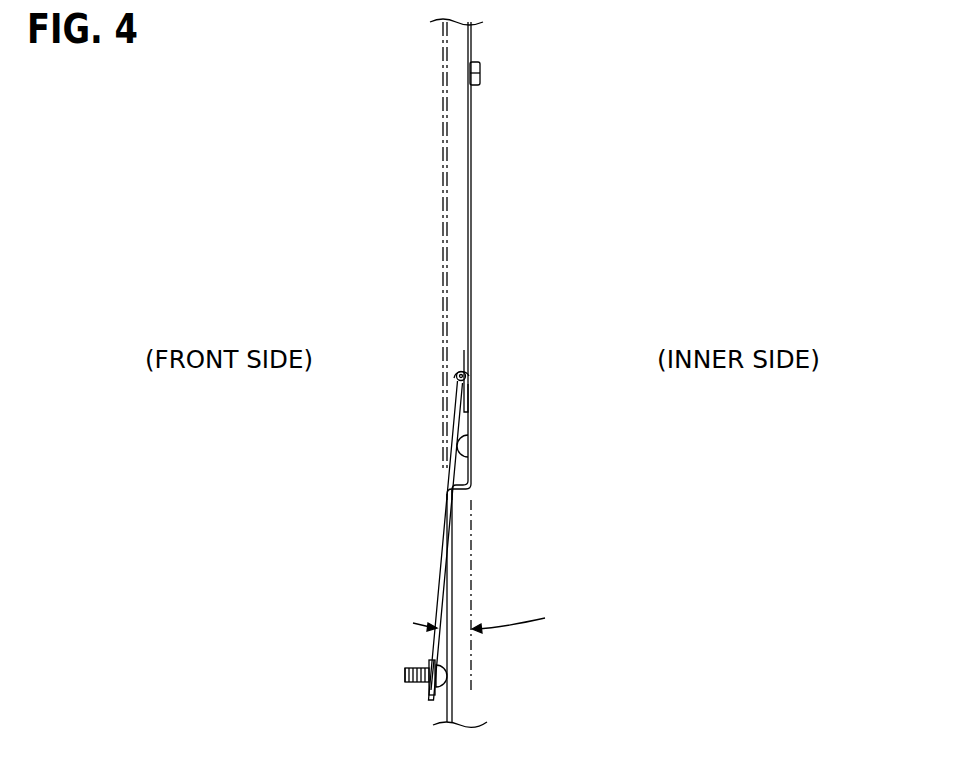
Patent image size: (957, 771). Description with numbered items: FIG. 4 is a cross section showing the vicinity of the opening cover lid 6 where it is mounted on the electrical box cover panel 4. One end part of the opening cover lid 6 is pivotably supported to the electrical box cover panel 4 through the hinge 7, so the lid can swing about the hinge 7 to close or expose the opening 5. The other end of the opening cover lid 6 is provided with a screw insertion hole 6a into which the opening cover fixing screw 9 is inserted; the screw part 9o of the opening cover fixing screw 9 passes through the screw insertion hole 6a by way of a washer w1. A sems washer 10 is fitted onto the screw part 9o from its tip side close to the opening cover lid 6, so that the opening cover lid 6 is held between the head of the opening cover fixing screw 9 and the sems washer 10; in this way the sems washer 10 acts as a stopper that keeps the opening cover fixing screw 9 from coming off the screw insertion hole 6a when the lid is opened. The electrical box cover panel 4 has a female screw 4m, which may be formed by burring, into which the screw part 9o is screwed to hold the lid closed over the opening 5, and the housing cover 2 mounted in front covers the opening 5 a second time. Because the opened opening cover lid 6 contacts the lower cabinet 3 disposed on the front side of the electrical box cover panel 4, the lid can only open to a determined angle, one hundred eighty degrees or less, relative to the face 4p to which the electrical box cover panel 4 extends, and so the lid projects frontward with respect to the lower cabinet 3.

The housing cover 2 is at (427, 153).
The lower cabinet 3 is at (567, 490).
The electrical box cover panel 4 is at (567, 22).
The female screw 4m is at (480, 73).
The face 4p is at (468, 461).
The opening 5 is at (469, 345).
The opening cover lid 6 is at (440, 545).
The screw insertion hole 6a is at (421, 668).
The hinge 7 is at (457, 370).
The opening cover fixing screw 9 is at (403, 662).
The screw part 9o is at (404, 676).
The sems washer 10 is at (436, 690).
The washer w1 is at (438, 697).